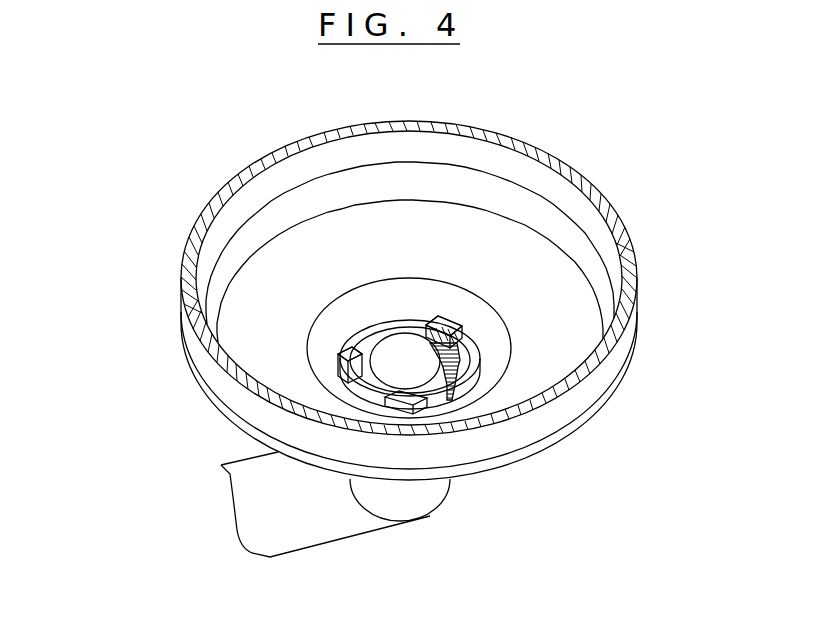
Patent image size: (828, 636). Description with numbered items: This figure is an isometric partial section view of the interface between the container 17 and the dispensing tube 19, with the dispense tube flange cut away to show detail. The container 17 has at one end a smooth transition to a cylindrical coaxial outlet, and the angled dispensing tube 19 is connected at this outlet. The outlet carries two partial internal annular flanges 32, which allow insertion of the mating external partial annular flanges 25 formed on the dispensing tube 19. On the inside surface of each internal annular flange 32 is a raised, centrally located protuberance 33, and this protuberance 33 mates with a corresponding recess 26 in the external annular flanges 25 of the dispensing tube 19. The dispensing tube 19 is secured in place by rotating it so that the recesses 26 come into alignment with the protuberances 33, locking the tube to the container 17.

The container 17 is at (203, 380).
The dispensing tube 19 is at (368, 529).
The external partial annular flanges 25 is at (350, 382).
The recess 26 is at (432, 322).
The partial internal annular flanges 32 is at (356, 381).
The protuberance 33 is at (460, 343).